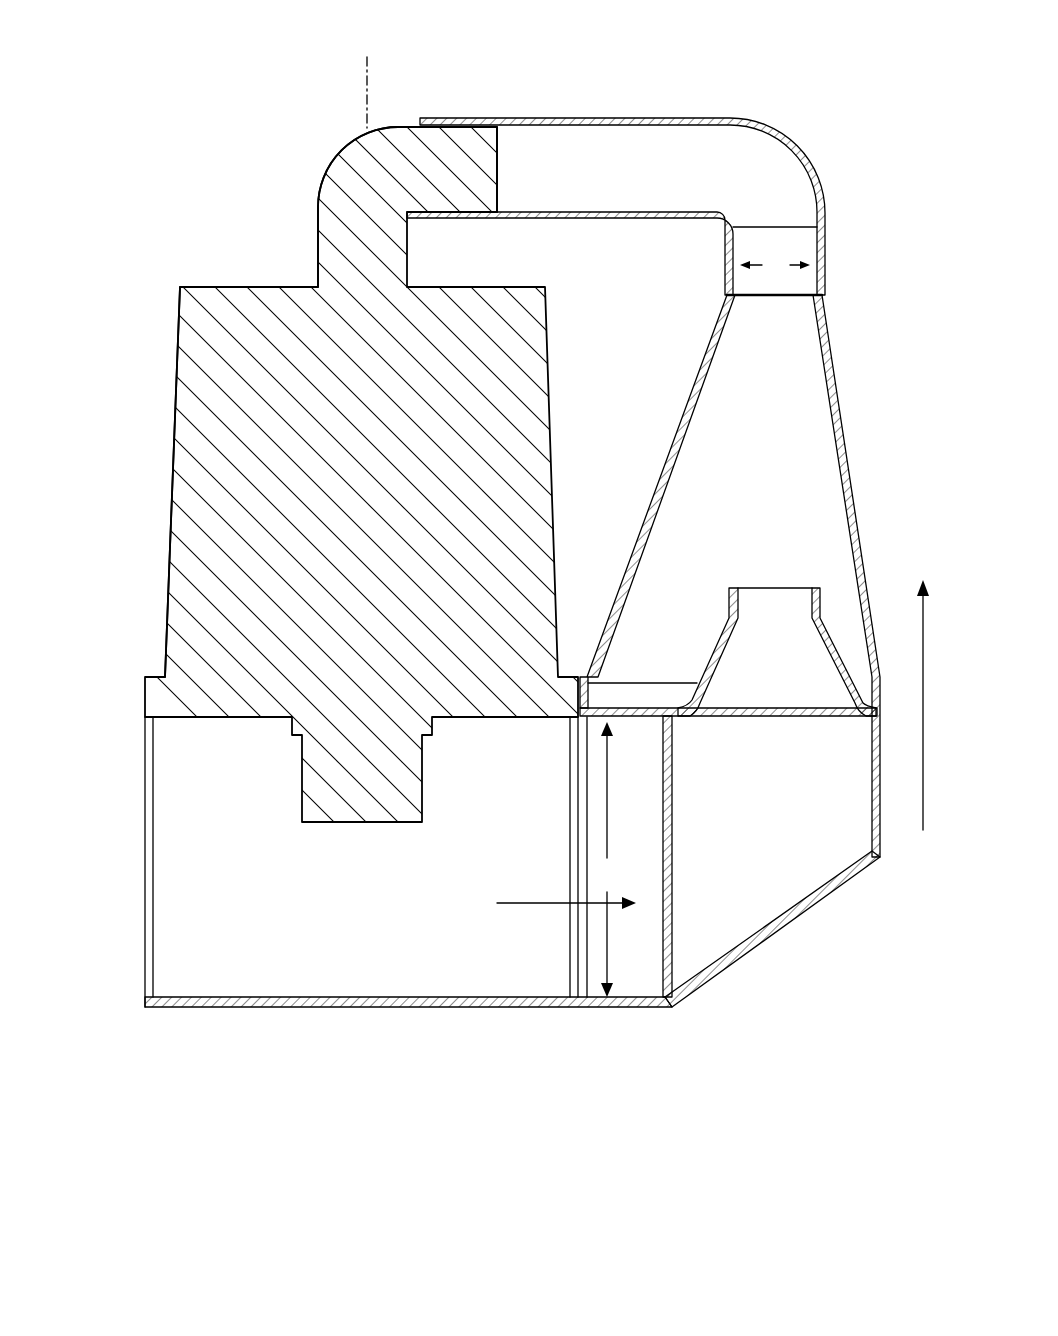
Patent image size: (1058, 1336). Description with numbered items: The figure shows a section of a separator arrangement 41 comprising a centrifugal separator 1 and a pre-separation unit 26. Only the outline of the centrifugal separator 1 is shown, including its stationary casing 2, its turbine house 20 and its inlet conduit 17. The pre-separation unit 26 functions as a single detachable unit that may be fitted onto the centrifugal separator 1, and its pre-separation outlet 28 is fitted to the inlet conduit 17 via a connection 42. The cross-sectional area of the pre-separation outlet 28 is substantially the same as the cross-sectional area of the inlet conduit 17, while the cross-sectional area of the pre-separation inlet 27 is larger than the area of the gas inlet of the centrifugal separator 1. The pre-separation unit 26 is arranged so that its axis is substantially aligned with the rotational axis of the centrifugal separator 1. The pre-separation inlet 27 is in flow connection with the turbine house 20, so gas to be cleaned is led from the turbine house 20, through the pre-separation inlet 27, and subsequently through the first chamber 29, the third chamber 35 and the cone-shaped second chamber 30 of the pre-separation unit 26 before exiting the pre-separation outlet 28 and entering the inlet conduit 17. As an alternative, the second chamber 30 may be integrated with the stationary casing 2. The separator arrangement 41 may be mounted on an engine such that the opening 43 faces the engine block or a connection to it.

The centrifugal separator 1 is at (200, 358).
The stationary casing 2 is at (170, 452).
The inlet conduit 17 is at (460, 142).
The turbine house 20 is at (298, 990).
The pre-separation unit 26 is at (825, 340).
The pre-separation inlet 27 is at (584, 930).
The pre-separation outlet 28 is at (780, 238).
The first chamber 29 is at (618, 985).
The second chamber 30 is at (777, 417).
The third chamber 35 is at (737, 893).
The separator arrangement 41 is at (262, 203).
The connection 42 is at (780, 137).
The opening 43 is at (145, 905).